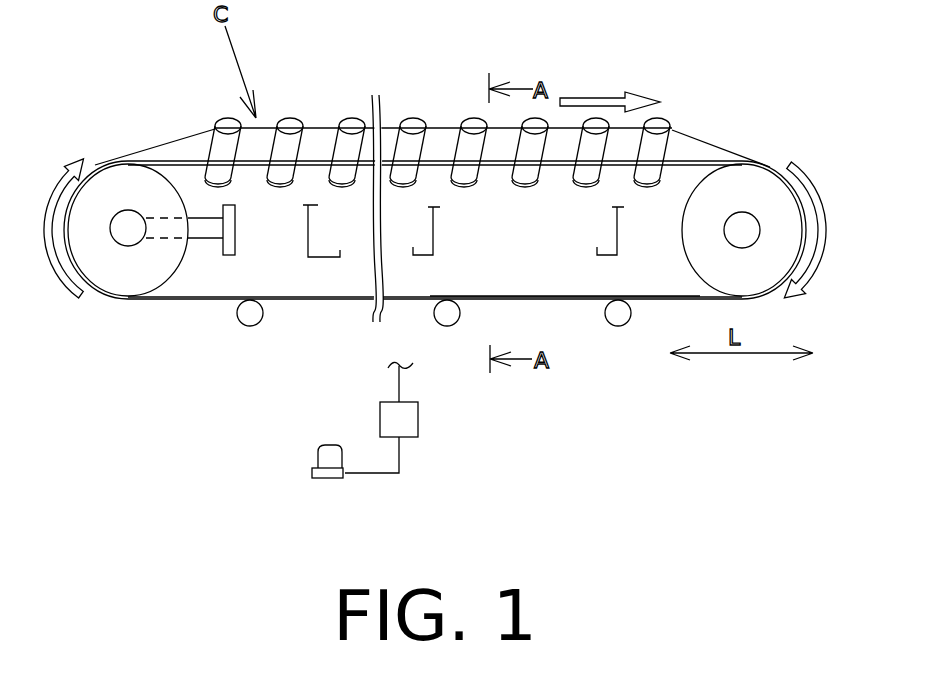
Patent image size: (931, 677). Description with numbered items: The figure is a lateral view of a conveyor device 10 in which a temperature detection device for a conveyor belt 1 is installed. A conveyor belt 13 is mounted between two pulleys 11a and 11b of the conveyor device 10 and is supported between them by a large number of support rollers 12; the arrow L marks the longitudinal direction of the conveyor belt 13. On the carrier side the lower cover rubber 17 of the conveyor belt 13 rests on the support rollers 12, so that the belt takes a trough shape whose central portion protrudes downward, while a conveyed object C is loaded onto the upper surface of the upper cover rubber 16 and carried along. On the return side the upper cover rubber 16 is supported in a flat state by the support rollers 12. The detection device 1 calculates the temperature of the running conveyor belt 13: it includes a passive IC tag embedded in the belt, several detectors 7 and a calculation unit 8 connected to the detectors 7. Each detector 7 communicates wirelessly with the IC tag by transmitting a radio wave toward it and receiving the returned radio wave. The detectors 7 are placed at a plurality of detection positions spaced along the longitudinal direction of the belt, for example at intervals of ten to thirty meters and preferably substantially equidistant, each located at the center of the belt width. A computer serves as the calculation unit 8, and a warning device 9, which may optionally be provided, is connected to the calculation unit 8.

The temperature detection device for a conveyor belt 1 is at (644, 397).
The detector 7 is at (314, 206).
The calculation unit 8 is at (415, 420).
The warning device 9 is at (305, 455).
The conveyor device 10 is at (683, 126).
The pulley 11a is at (752, 186).
The pulley 11b is at (103, 187).
The support roller 12 is at (352, 120).
The conveyor belt 13 is at (389, 128).
The upper cover rubber 16 is at (305, 301).
The lower cover rubber 17 is at (532, 296).